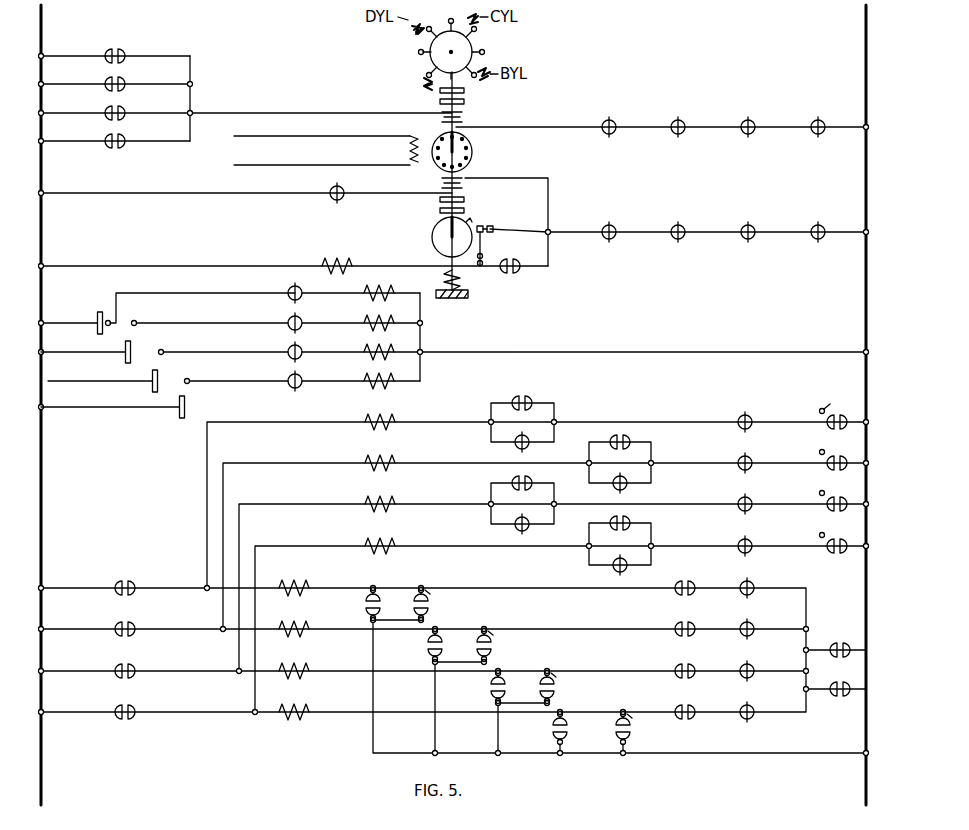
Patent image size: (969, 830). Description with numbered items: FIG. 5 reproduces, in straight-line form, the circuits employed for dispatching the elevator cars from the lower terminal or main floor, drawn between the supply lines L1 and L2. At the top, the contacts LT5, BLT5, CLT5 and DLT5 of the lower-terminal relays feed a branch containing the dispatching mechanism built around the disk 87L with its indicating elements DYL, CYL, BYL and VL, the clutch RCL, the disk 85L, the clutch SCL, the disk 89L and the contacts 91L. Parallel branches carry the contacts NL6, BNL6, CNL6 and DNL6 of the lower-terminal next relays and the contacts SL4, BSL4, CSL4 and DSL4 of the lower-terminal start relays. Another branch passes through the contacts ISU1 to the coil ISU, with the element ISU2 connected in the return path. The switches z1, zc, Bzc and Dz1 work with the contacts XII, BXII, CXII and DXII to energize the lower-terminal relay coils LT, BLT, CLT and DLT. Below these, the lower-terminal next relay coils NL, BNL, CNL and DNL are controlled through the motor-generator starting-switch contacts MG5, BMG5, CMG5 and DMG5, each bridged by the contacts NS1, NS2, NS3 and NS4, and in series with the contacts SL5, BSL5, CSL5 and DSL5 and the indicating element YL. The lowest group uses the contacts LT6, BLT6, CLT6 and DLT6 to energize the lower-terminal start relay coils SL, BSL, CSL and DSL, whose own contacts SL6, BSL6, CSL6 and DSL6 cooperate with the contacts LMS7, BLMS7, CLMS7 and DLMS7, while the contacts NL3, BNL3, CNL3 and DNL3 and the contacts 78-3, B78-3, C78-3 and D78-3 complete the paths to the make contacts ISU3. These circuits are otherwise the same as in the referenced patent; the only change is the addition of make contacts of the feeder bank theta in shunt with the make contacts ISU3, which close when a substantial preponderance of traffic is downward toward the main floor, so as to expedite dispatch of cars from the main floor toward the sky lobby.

The supply line L1 is at (41, 14).
The supply line L2 is at (866, 14).
The relay LT contact LT5 is at (122, 50).
The relay BLT contact BLT5 is at (122, 78).
The relay CLT contact CLT5 is at (122, 107).
The relay DLT contact DLT5 is at (122, 135).
The indicator lamp disk 87L is at (466, 48).
The lamp DYL is at (819, 534).
The lamp CYL is at (819, 492).
The lamp BYL is at (819, 451).
The lamp VL is at (420, 70).
The clutch RCL is at (462, 118).
The stepping switch disk 85L is at (472, 152).
The clutch SCL is at (462, 184).
The cam disk 89L is at (432, 237).
The contact 91L is at (484, 224).
The relay NL contact NL6 is at (617, 113).
The relay BNL contact BNL6 is at (686, 113).
The relay CNL contact CNL6 is at (756, 113).
The relay DNL contact DNL6 is at (826, 113).
The relay SL contact SL4 is at (617, 218).
The relay BSL contact BSL4 is at (686, 218).
The relay CSL contact CSL4 is at (756, 218).
The relay DSL contact DSL4 is at (826, 218).
The contact ISU1 is at (334, 200).
The relay coil ISU is at (345, 257).
The lamp ISU2 is at (515, 273).
The switch z1 is at (97, 314).
The switch zc is at (201, 317).
The switch Bzc is at (136, 320).
The switch Dz1 is at (179, 416).
The contact XII is at (290, 286).
The contact BXII is at (290, 316).
The contact CXII is at (290, 345).
The contact DXII is at (290, 374).
The lower-terminal relay LT is at (396, 277).
The relay coil BLT is at (368, 318).
The relay coil CLT is at (368, 347).
The relay coil DLT is at (368, 376).
The lower-terminal next relay NL is at (370, 416).
The relay coil BNL is at (370, 457).
The relay coil CNL is at (370, 498).
The relay coil DNL is at (370, 540).
The contact MG5 is at (524, 396).
The contact NS1 is at (516, 448).
The contact CMG5 is at (514, 480).
The contact NS3 is at (516, 530).
The contact BMG5 is at (626, 438).
The contact NS2 is at (626, 489).
The contact DMG5 is at (626, 519).
The contact NS4 is at (614, 571).
The relay SL contact SL5 is at (740, 415).
The relay BSL contact BSL5 is at (740, 456).
The relay CSL contact CSL5 is at (740, 497).
The relay DSL contact DSL5 is at (740, 539).
The lamp YL is at (834, 408).
The relay LT contact LT6 is at (132, 582).
The relay BLT contact BLT6 is at (132, 623).
The relay CLT contact CLT6 is at (132, 665).
The relay DLT contact DLT6 is at (132, 706).
The lower-terminal start relay SL is at (300, 580).
The relay coil BSL is at (300, 621).
The relay coil CSL is at (300, 663).
The relay coil DSL is at (300, 704).
The contact SL6 is at (366, 598).
The limit switch LMS7 is at (428, 598).
The contact BSL6 is at (428, 639).
The limit switch BLMS7 is at (491, 640).
The contact CSL6 is at (491, 681).
The limit switch CLMS7 is at (554, 682).
The contact DSL6 is at (553, 722).
The limit switch DLMS7 is at (630, 740).
The relay NL contact NL3 is at (678, 594).
The relay BNL contact BNL3 is at (678, 635).
The relay CNL contact CNL3 is at (678, 677).
The relay DNL contact DNL3 is at (690, 719).
The contact 78-3 is at (751, 595).
The contact B78-3 is at (751, 636).
The contact C78-3 is at (751, 678).
The contact D78-3 is at (751, 719).
The make contacts 1SU3 ISU3 is at (850, 636).